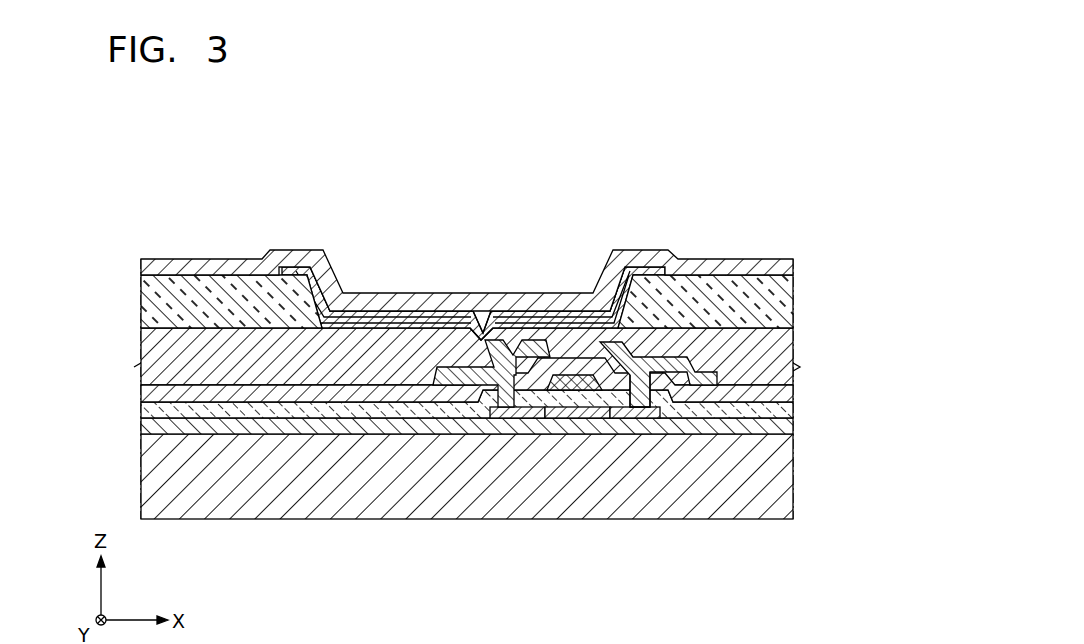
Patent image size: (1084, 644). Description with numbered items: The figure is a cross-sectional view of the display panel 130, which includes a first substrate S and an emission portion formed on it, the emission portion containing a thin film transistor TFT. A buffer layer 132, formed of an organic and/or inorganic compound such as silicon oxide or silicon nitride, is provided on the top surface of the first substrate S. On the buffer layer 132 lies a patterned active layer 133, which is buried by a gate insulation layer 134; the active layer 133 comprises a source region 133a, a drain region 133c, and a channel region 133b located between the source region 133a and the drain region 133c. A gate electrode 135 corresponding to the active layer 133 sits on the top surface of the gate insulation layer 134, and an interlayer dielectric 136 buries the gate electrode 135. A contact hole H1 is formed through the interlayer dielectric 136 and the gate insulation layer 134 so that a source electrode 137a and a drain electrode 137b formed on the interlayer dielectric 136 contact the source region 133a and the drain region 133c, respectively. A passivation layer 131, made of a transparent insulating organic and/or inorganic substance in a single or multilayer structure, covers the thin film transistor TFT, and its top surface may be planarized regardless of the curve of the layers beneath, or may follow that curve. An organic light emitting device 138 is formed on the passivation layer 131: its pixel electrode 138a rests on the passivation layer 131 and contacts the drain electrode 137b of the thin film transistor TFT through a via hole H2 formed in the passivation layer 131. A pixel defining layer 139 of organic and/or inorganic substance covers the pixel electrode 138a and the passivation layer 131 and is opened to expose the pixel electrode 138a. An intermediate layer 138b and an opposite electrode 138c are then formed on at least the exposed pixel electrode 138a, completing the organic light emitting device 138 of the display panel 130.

The display panel 130 is at (277, 163).
The first substrate S is at (784, 494).
The buffer layer 132 is at (786, 430).
The active layer 133 is at (573, 511).
The source region 133a is at (633, 419).
The channel region 133b is at (577, 419).
The drain region 133c is at (507, 419).
The gate insulation layer 134 is at (786, 410).
The gate electrode 135 is at (585, 375).
The interlayer dielectric 136 is at (786, 393).
The source electrode 137a is at (618, 344).
The drain electrode 137b is at (537, 340).
The first contact hole H1 is at (679, 372).
The thin film transistor TFT is at (596, 292).
The passivation layer 131 is at (786, 358).
The via hole H2 is at (510, 312).
The organic light emitting device 138 is at (473, 252).
The pixel electrode 138a is at (360, 318).
The intermediate layer 138b is at (423, 318).
The opposite electrode 138c is at (342, 200).
The pixel defining layer 139 is at (786, 295).